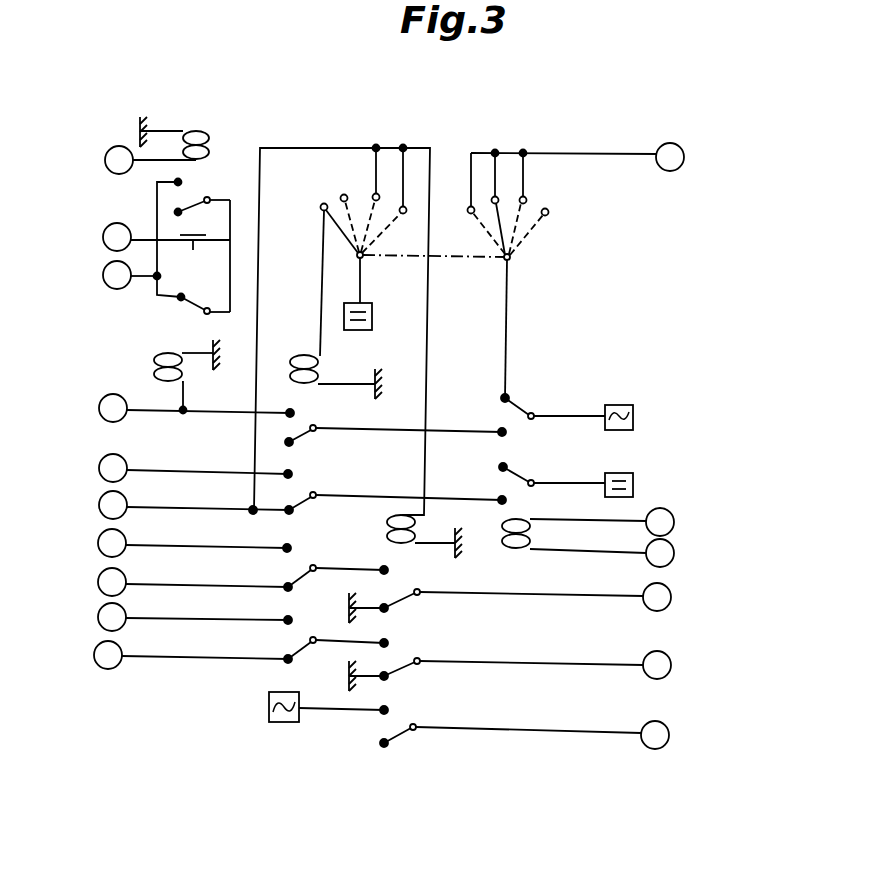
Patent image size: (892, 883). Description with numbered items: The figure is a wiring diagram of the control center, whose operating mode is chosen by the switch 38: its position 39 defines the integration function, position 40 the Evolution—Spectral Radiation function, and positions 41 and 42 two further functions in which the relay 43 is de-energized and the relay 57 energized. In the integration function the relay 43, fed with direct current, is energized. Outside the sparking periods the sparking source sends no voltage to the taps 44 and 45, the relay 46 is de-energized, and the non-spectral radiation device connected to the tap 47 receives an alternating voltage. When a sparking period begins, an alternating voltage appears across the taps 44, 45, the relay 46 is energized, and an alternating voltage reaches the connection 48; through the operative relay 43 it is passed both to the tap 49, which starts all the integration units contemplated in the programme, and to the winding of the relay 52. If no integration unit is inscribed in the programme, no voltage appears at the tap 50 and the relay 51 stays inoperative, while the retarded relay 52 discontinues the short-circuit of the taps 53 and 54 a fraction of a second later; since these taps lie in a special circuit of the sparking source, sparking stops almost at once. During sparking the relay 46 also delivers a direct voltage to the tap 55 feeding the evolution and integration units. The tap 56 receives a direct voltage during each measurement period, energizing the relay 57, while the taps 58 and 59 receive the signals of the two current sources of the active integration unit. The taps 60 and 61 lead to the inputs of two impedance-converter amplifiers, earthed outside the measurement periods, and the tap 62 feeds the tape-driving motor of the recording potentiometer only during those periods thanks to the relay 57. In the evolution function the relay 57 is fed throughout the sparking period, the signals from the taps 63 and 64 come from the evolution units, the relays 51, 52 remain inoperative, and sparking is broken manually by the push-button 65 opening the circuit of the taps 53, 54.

The switch 38 is at (408, 257).
The position 39 is at (341, 238).
The position 40 is at (340, 215).
The position 41 is at (374, 216).
The position 42 is at (388, 228).
The relay 43 is at (305, 355).
The tap 44 is at (664, 512).
The tap 45 is at (674, 554).
The relay 46 is at (513, 550).
The tap 47 is at (671, 146).
The connection 48 is at (393, 432).
The tap 49 is at (114, 394).
The tap 50 is at (115, 148).
The relay 51 is at (200, 131).
The relay 52 is at (172, 353).
The tap 53 is at (116, 223).
The tap 54 is at (117, 289).
The tap 55 is at (114, 454).
The tap 56 is at (99, 505).
The relay 57 is at (387, 531).
The tap 58 is at (98, 544).
The tap 59 is at (98, 618).
The tap 60 is at (671, 597).
The tap 61 is at (671, 665).
The tap 62 is at (665, 745).
The tap 63 is at (98, 583).
The tap 64 is at (102, 665).
The push-button 65 is at (196, 248).